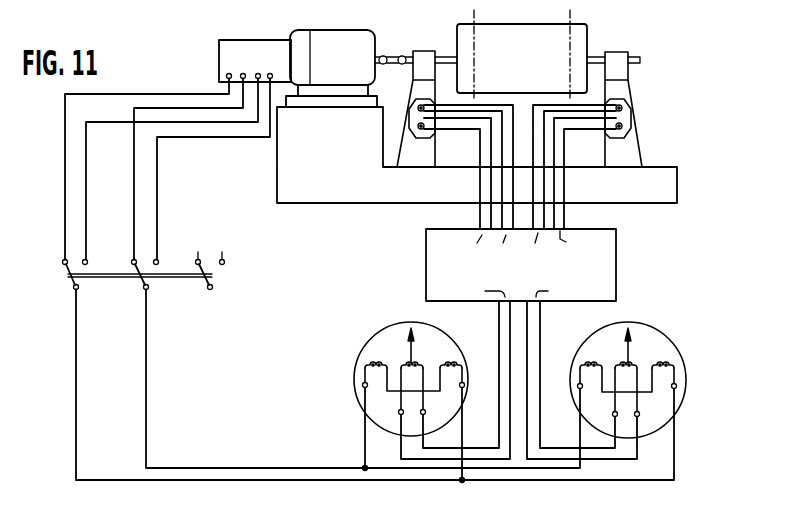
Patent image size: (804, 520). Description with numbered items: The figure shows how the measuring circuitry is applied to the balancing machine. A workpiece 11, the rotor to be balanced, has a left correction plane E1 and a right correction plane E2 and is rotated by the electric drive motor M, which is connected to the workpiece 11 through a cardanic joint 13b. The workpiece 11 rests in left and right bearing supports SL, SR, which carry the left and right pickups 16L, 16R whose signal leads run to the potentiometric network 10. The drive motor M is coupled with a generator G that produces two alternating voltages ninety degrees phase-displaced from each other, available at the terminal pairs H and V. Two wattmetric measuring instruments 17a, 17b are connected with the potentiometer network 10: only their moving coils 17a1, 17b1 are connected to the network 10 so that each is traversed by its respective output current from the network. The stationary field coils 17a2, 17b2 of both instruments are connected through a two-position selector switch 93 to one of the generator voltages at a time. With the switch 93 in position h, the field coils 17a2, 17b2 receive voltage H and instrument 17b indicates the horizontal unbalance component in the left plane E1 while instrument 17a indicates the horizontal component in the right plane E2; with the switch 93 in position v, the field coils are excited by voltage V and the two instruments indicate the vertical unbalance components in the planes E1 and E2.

The potentiometric network 10 is at (617, 266).
The workpiece 11 is at (532, 49).
The cardanic joint 13b is at (393, 53).
The left vibration pickup 16L is at (409, 119).
The right vibration pickup 16R is at (631, 117).
The measuring instrument 17a is at (657, 336).
The moving coil 17a1 is at (630, 366).
The stationary field coil 17a2 is at (589, 363).
The measuring instrument 17b is at (371, 346).
The moving coil 17b1 is at (410, 362).
The stationary field coil 17b2 is at (367, 366).
The two-position selector switch 93 is at (124, 277).
The electric drive motor M is at (333, 30).
The generator G is at (219, 55).
The left bearing support SL is at (420, 86).
The right bearing support SR is at (623, 91).
The left correction plane E1 is at (474, 13).
The right correction plane E2 is at (570, 14).